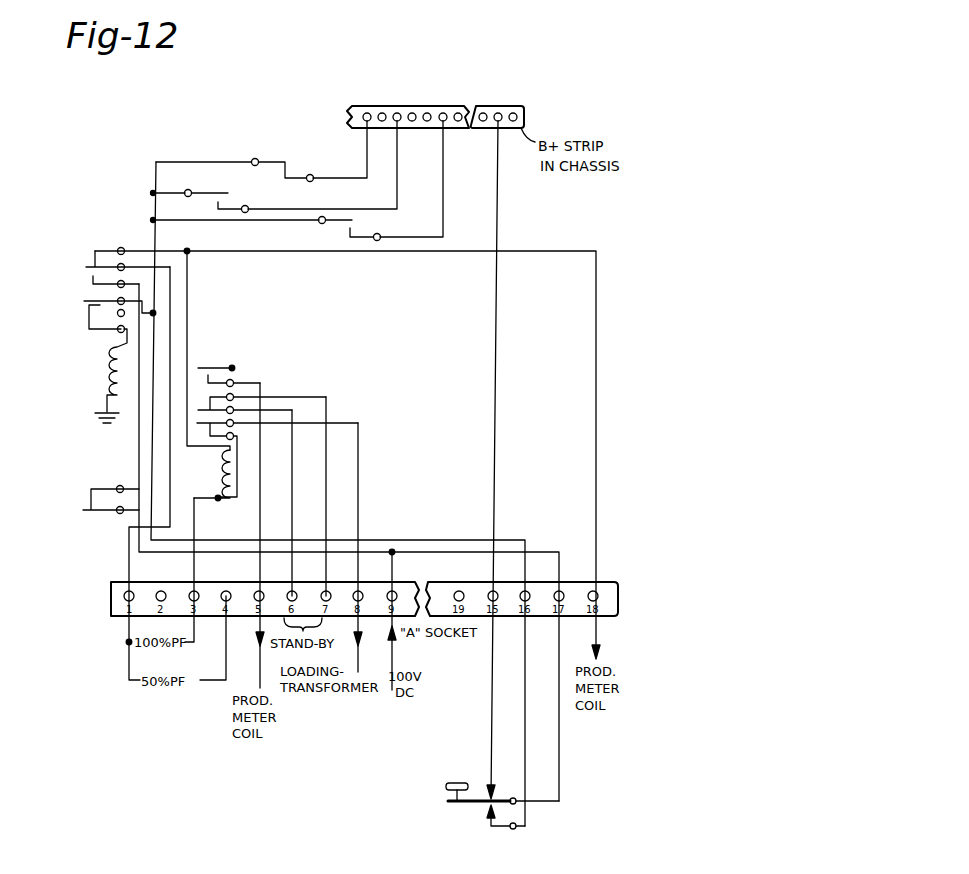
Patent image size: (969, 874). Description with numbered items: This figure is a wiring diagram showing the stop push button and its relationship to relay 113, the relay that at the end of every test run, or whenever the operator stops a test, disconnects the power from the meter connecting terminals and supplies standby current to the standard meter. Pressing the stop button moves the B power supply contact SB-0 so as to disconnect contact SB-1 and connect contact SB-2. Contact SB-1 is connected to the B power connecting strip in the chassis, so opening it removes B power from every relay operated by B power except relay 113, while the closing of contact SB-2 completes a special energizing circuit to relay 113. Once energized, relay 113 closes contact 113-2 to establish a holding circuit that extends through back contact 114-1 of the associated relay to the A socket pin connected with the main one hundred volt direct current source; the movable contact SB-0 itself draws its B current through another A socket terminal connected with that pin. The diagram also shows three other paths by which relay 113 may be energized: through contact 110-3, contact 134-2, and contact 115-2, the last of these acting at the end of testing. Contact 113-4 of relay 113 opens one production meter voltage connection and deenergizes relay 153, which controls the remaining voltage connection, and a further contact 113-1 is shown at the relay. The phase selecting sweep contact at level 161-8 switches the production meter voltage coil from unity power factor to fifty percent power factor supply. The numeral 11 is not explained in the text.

The contact 110-3 is at (297, 166).
The contact 11 is at (255, 172).
The contact 134-2 is at (227, 204).
The contact 115-2 is at (357, 232).
The contact 113-4 is at (95, 257).
The contact 113-2 is at (89, 320).
The contact 113-1 is at (99, 320).
The relay 113 is at (100, 393).
The back contact 114-1 is at (92, 498).
The relay 153 is at (221, 485).
The level of stepping relay 161-8 is at (232, 368).
The contact SB-1 is at (492, 790).
The B power supply contact SB-0 is at (466, 805).
The contact SB-2 is at (488, 822).